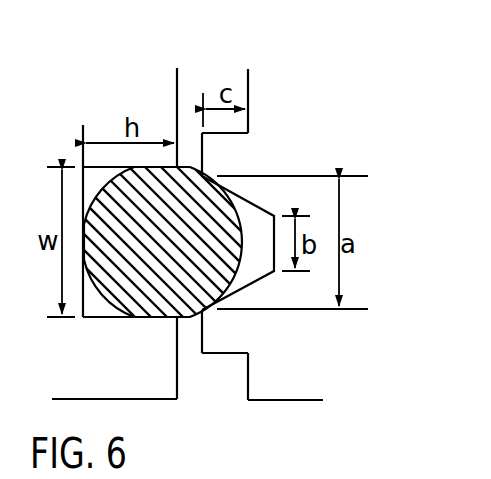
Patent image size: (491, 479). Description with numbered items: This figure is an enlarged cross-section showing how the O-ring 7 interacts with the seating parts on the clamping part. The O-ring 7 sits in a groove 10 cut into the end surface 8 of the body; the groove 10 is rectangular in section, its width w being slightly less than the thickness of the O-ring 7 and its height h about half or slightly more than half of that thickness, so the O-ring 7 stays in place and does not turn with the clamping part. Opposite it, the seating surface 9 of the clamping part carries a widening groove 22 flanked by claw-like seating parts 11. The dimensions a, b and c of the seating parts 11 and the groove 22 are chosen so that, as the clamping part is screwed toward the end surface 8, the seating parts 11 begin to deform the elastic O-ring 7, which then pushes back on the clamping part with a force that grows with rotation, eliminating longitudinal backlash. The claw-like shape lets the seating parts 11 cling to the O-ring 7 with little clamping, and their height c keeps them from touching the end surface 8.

The O-ring 7 is at (105, 296).
The end surface of the body 8 is at (178, 373).
The seating surface of the clamping part 9 is at (248, 80).
The groove 10 is at (89, 168).
The seating parts 11 is at (227, 355).
The groove 22 is at (252, 216).